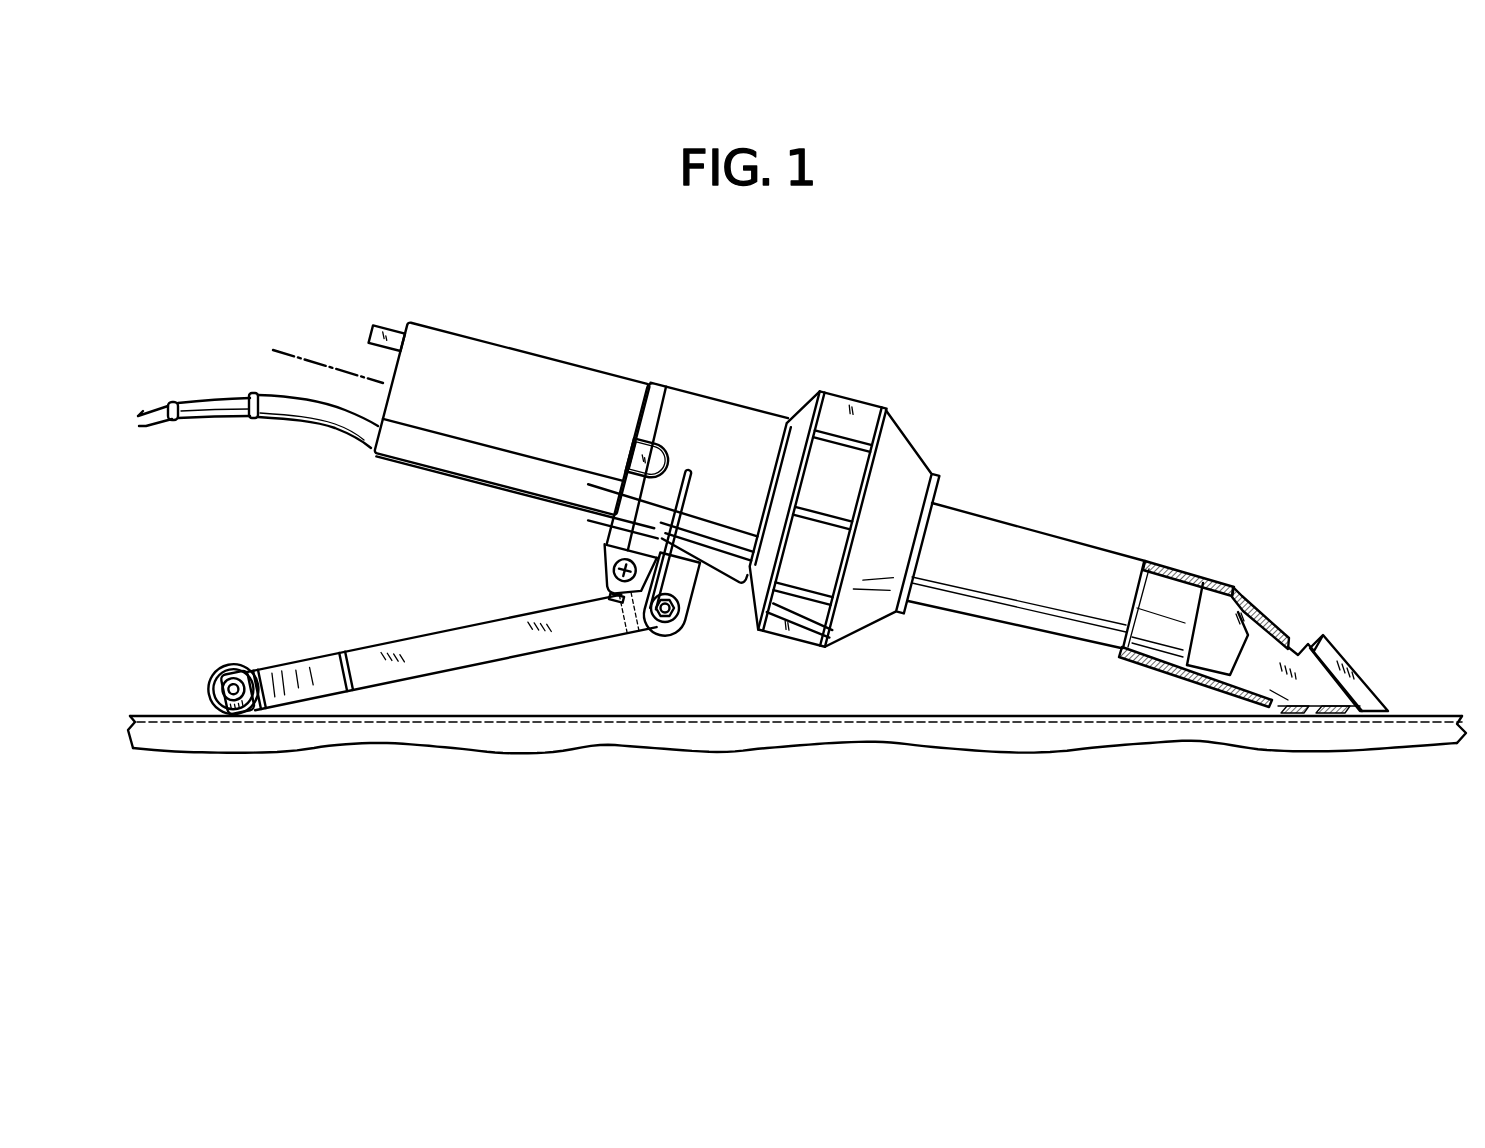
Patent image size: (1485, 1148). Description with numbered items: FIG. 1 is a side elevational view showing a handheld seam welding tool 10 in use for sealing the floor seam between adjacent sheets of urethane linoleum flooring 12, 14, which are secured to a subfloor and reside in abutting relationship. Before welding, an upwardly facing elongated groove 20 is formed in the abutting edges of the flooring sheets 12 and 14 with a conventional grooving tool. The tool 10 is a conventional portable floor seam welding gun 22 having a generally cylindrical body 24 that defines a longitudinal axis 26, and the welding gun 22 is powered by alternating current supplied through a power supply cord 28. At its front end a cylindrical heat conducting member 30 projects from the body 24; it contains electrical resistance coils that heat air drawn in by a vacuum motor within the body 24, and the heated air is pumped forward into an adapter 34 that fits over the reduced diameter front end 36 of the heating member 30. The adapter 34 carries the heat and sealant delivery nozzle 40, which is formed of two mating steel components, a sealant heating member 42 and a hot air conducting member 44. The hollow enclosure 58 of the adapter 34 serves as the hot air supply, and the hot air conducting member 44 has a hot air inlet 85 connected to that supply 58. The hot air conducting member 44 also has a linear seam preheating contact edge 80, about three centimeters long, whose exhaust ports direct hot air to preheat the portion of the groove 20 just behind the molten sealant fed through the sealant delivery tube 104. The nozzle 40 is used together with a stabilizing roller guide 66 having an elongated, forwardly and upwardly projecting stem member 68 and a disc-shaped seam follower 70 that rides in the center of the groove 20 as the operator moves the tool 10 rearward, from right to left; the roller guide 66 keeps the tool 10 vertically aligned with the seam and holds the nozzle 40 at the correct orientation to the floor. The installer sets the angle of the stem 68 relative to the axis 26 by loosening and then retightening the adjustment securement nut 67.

The seam welding tool 10 is at (1020, 360).
The flooring sheet 12 is at (882, 716).
The flooring sheet 14 is at (797, 734).
The groove 20 is at (1025, 723).
The floor seam welding gun 22 is at (862, 382).
The body 24 is at (520, 365).
The longitudinal axis 26 is at (303, 358).
The power supply cord 28 is at (312, 417).
The heat conducting member 30 is at (1006, 532).
The adapter 34 is at (1213, 567).
The reduced diameter front end 36 is at (1167, 588).
The nozzle 40 is at (1340, 637).
The sealant heating member 42 is at (1378, 689).
The hot air conducting member 44 is at (1290, 688).
The hollow enclosure 58 is at (1200, 660).
The roller guide 66 is at (376, 640).
The adjustment securement nut 67 is at (678, 625).
The stem member 68 is at (493, 655).
The seam follower 70 is at (228, 660).
The seam preheating contact edge 80 is at (1324, 716).
The hot air inlet 85 is at (1264, 647).
The sealant delivery tube 104 is at (1335, 657).